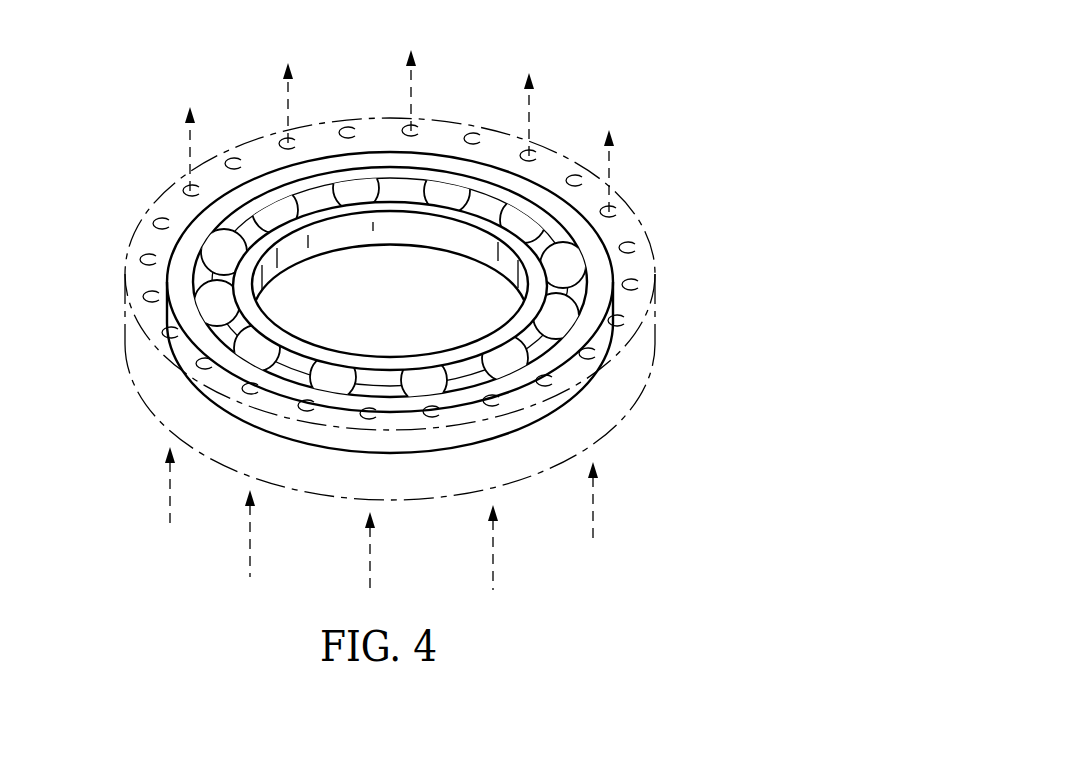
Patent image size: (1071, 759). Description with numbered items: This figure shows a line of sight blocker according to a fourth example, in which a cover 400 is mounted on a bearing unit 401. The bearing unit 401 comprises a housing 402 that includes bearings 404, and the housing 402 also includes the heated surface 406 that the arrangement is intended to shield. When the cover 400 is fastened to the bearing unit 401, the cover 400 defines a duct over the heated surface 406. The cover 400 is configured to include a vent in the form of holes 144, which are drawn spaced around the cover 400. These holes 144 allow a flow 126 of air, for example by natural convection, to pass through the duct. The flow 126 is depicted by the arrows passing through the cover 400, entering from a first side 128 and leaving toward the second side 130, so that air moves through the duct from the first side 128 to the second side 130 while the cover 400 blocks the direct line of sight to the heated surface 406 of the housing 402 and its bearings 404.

The flow 126 is at (169, 494).
The first side 128 is at (630, 444).
The second side 130 is at (476, 80).
The holes 144 is at (356, 118).
The cover 400 is at (392, 352).
The bearing unit 401 is at (523, 458).
The housing 402 is at (170, 314).
The bearings 404 is at (580, 278).
The heated surface 406 is at (392, 444).